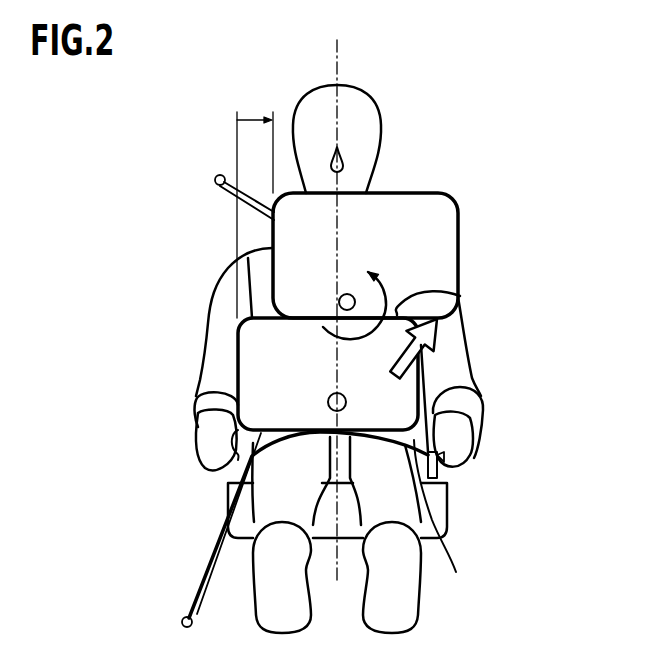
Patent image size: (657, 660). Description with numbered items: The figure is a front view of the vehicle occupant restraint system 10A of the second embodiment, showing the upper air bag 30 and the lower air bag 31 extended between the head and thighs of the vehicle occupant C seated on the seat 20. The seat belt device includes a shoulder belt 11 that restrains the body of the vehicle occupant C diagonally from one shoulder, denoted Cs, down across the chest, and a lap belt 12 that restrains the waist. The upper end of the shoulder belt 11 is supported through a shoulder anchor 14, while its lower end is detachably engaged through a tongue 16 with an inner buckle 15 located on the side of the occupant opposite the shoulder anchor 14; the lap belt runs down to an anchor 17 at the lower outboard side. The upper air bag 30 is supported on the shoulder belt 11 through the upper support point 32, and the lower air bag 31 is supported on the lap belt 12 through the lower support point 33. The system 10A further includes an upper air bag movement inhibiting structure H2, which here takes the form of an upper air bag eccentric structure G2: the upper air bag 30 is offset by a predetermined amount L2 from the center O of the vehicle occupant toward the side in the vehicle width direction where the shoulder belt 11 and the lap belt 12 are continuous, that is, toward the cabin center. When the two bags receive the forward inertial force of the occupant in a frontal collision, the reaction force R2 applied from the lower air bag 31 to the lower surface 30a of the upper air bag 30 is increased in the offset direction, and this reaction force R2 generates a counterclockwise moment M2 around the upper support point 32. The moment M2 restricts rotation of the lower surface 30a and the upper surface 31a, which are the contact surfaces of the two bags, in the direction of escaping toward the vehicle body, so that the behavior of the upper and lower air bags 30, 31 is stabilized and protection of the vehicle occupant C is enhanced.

The vehicle occupant restraint system 10A is at (511, 106).
The upper air bag 30 is at (296, 211).
The lower surface of upper air bag 30a is at (438, 321).
The lower air bag 31 is at (299, 390).
The upper surface of lower air bag 31a is at (460, 296).
The upper support point 32 is at (339, 301).
The lower support point 33 is at (237, 348).
The shoulder belt 11 is at (271, 217).
The lap belt 12 is at (440, 521).
The shoulder anchor 14 is at (215, 180).
The inner buckle 15 is at (438, 468).
The tongue 16 is at (441, 456).
The lap anchor 17 is at (182, 622).
The seat 20 is at (461, 508).
The vehicle occupant C is at (396, 127).
The center of the vehicle occupant O is at (337, 67).
The shoulder Cs is at (263, 247).
The predetermined offset amount L2 is at (250, 117).
The upper air bag eccentric structure G2 is at (449, 190).
The upper air bag movement inhibiting structure H2 is at (463, 230).
The counterclockwise moment M2 is at (383, 289).
The reaction force R2 is at (430, 376).